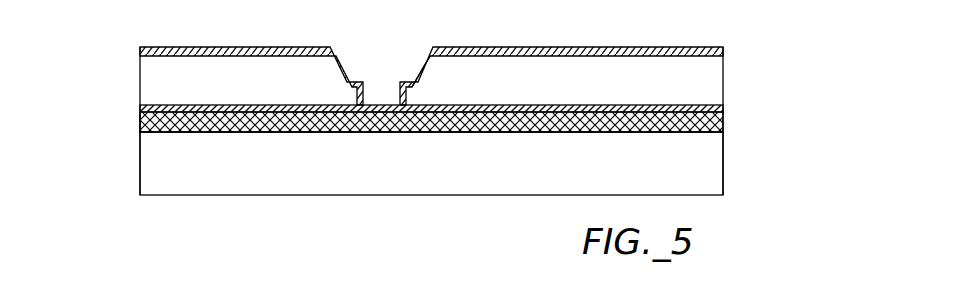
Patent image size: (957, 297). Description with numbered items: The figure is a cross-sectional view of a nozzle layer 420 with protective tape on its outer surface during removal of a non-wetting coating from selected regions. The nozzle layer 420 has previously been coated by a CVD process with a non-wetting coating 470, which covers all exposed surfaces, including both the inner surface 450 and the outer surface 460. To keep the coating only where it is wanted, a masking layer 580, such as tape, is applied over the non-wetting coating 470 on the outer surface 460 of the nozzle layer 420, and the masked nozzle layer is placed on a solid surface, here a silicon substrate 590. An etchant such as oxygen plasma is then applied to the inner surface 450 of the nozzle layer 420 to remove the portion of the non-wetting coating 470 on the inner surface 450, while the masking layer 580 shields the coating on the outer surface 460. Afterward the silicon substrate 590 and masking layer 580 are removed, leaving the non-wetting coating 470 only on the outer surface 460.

The nozzle layer 420 is at (723, 79).
The inner surface 450 is at (432, 77).
The outer surface 460 is at (427, 104).
The non-wetting coating 470 is at (723, 111).
The masking layer 580 is at (140, 119).
The silicon substrate 590 is at (140, 154).